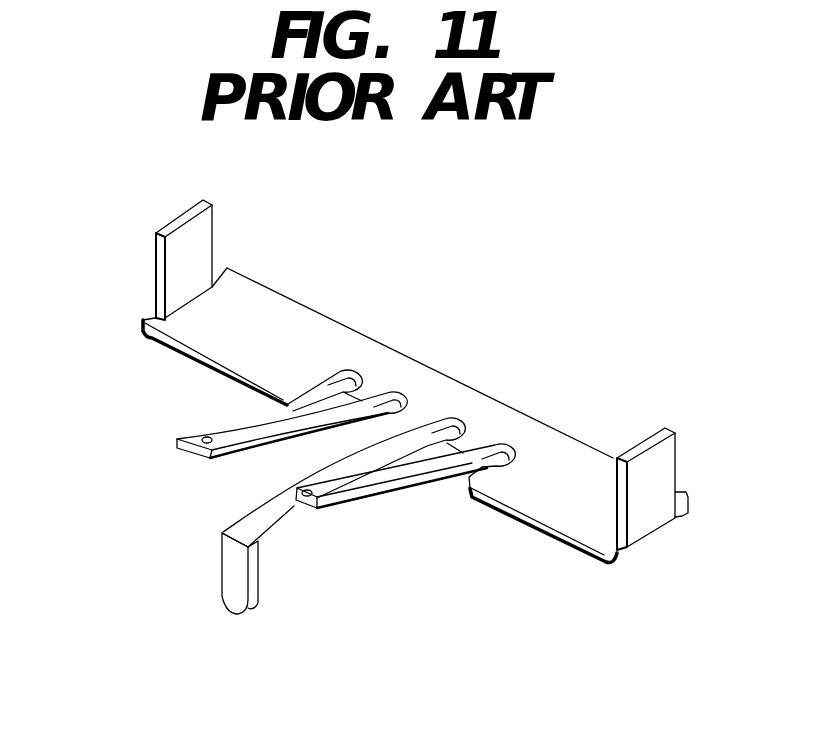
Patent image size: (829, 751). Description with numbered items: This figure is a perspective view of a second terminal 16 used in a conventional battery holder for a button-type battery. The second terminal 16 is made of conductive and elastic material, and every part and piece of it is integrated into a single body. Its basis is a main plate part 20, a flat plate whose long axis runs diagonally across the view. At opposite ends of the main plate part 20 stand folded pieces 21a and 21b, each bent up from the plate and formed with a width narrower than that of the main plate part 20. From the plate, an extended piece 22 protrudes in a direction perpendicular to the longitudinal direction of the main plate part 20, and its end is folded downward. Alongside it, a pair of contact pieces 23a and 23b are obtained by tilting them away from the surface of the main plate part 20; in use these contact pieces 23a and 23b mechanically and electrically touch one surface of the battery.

The second terminal 16 is at (492, 244).
The main plate part 20 is at (306, 322).
The folded piece 21a is at (180, 266).
The folded piece 21b is at (647, 490).
The extended piece 22 is at (263, 528).
The contact piece 23a is at (243, 432).
The contact piece 23b is at (338, 488).